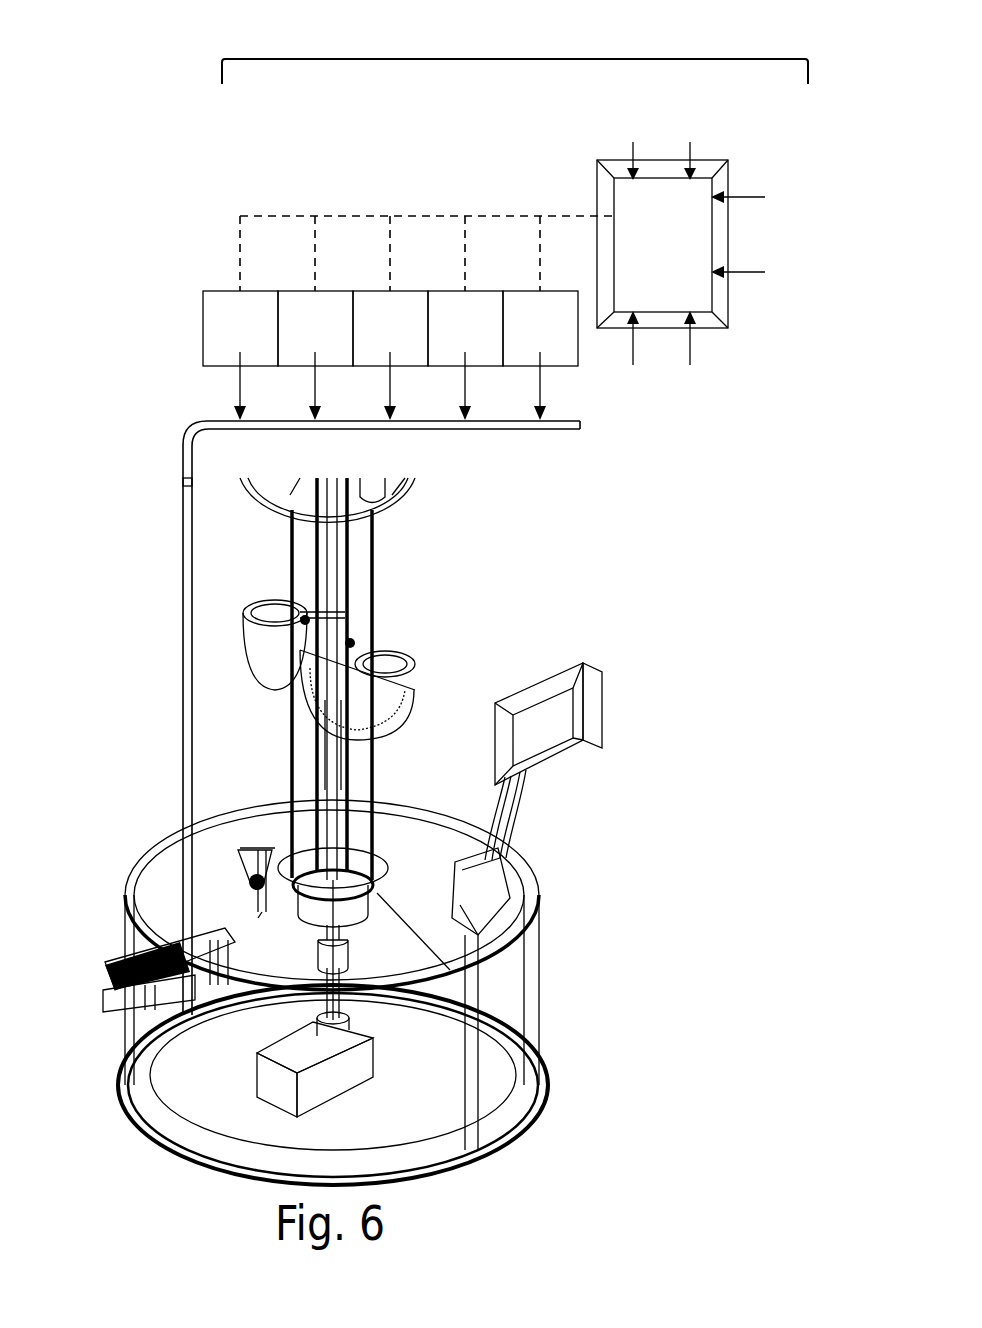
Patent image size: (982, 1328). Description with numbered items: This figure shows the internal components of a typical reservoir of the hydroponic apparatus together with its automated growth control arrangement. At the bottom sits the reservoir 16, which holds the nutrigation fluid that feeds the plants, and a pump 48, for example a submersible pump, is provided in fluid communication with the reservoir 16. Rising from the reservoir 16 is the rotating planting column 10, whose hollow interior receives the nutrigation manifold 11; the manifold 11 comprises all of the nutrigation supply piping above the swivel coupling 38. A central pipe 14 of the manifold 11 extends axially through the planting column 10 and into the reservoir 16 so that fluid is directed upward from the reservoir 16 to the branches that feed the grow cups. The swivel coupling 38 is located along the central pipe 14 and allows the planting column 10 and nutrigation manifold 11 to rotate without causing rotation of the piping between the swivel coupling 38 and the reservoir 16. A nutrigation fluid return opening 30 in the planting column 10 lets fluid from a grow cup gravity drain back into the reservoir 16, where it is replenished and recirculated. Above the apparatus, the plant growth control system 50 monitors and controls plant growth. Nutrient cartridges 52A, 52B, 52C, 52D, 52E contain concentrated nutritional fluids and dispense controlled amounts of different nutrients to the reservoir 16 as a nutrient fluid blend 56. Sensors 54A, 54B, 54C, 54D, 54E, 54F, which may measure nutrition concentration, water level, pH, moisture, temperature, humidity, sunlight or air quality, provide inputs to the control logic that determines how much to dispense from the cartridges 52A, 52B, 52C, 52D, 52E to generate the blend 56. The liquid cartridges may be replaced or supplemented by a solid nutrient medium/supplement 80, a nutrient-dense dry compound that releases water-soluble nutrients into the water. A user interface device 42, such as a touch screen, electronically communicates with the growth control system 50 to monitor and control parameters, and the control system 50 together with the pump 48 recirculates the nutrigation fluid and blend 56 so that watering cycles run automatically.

The plant growth control system 50 is at (440, 58).
The nutrient cartridge 52A is at (240, 328).
The nutrient cartridge 52B is at (315, 328).
The nutrient cartridge 52C is at (390, 328).
The nutrient cartridge 52D is at (465, 328).
The nutrient cartridge 52E is at (540, 328).
The solid nutrient medium/supplement 80 is at (390, 377).
The sensor 54A is at (625, 144).
The sensor 54B is at (700, 144).
The sensor 54C is at (761, 198).
The sensor 54D is at (761, 273).
The sensor 54E is at (700, 353).
The sensor 54F is at (625, 353).
The nutrient fluid blend 56 is at (700, 302).
The rotating planting column 10 is at (297, 567).
The nutrigation manifold 11 is at (335, 556).
The central pipe 14 is at (327, 782).
The nutrigation fluid return opening 30 is at (310, 705).
The user interface device 42 is at (590, 712).
The reservoir 16 is at (522, 987).
The swivel coupling 38 is at (313, 873).
The pump 48 is at (280, 1075).